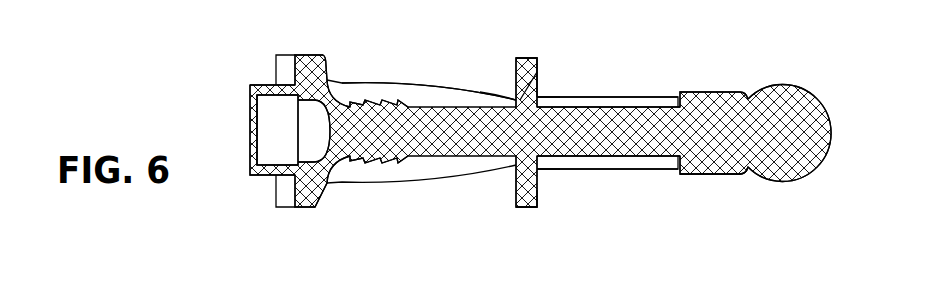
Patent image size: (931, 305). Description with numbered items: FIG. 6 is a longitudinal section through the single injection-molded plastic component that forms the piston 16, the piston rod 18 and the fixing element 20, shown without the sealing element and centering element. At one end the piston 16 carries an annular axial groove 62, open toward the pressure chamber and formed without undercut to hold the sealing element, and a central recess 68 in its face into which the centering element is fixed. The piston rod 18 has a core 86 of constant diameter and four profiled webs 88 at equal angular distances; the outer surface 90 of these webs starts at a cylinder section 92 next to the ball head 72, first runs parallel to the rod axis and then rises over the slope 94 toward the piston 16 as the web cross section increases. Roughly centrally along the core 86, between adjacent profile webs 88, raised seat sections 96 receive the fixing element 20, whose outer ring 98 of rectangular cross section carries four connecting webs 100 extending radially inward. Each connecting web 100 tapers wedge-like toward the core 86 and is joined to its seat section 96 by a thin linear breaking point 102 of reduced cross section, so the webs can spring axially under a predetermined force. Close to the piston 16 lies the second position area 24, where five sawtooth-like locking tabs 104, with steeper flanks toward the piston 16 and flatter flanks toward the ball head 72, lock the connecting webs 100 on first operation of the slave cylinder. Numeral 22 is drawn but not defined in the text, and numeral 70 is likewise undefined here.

The piston 16 is at (303, 208).
The piston rod 18 is at (706, 100).
The fixing element 20 is at (545, 60).
The sleeve end 22 is at (506, 83).
The second position area 24 is at (380, 89).
The axial groove 62 is at (276, 73).
The central recess 68 is at (290, 141).
The flange 70 is at (302, 54).
The ball head 72 is at (808, 98).
The core 86 is at (653, 136).
The profiled webs 88 is at (631, 99).
The outer surface 90 is at (584, 96).
The cylinder section 92 is at (727, 176).
The slope 94 is at (447, 87).
The seat section 96 is at (541, 99).
The outer ring 98 is at (537, 207).
The connecting webs 100 is at (516, 82).
The breaking point 102 is at (539, 73).
The locking tabs 104 is at (382, 101).